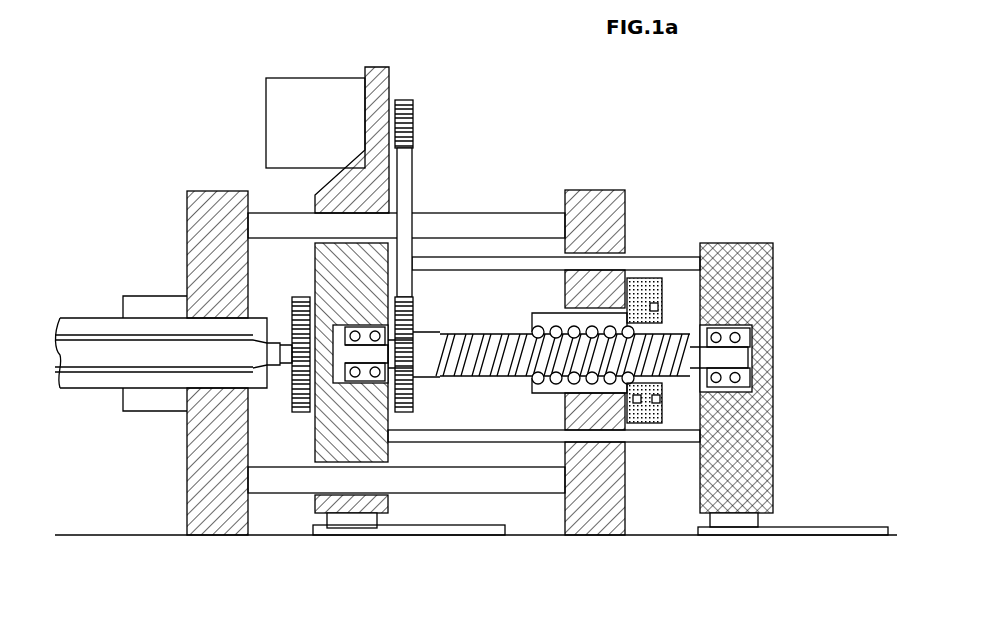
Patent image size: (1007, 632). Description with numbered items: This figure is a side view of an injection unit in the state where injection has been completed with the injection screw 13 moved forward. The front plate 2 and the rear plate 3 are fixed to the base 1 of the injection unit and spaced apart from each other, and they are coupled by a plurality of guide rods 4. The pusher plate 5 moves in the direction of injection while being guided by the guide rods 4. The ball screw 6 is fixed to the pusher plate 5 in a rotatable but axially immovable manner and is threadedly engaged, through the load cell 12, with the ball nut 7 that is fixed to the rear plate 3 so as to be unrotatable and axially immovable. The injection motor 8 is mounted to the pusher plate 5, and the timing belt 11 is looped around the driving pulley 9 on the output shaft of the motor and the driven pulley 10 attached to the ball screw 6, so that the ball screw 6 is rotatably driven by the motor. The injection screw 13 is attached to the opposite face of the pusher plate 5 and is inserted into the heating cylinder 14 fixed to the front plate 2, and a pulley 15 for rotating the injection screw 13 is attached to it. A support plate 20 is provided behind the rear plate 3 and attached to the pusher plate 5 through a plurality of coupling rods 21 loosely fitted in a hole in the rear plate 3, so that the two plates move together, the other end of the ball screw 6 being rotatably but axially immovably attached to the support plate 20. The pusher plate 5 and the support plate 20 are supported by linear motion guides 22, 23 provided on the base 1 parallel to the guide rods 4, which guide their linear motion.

The base 1 is at (103, 535).
The front plate 2 is at (187, 433).
The rear plate 3 is at (615, 190).
The guide rods 4 is at (490, 213).
The pusher plate 5 is at (315, 193).
The ball screw 6 is at (515, 332).
The ball nut 7 is at (540, 393).
The injection motor 8 is at (318, 78).
The driving pulley 9 is at (413, 104).
The driven pulley 10 is at (413, 404).
The timing belt 11 is at (412, 175).
The load cell 12 is at (640, 278).
The injection screw 13 is at (178, 342).
The heating cylinder 14 is at (84, 318).
The pulley 15 is at (293, 297).
The support plate 20 is at (735, 243).
The coupling rods 21 is at (525, 257).
The linear motion guide 22 is at (337, 515).
The linear motion guide 23 is at (712, 527).